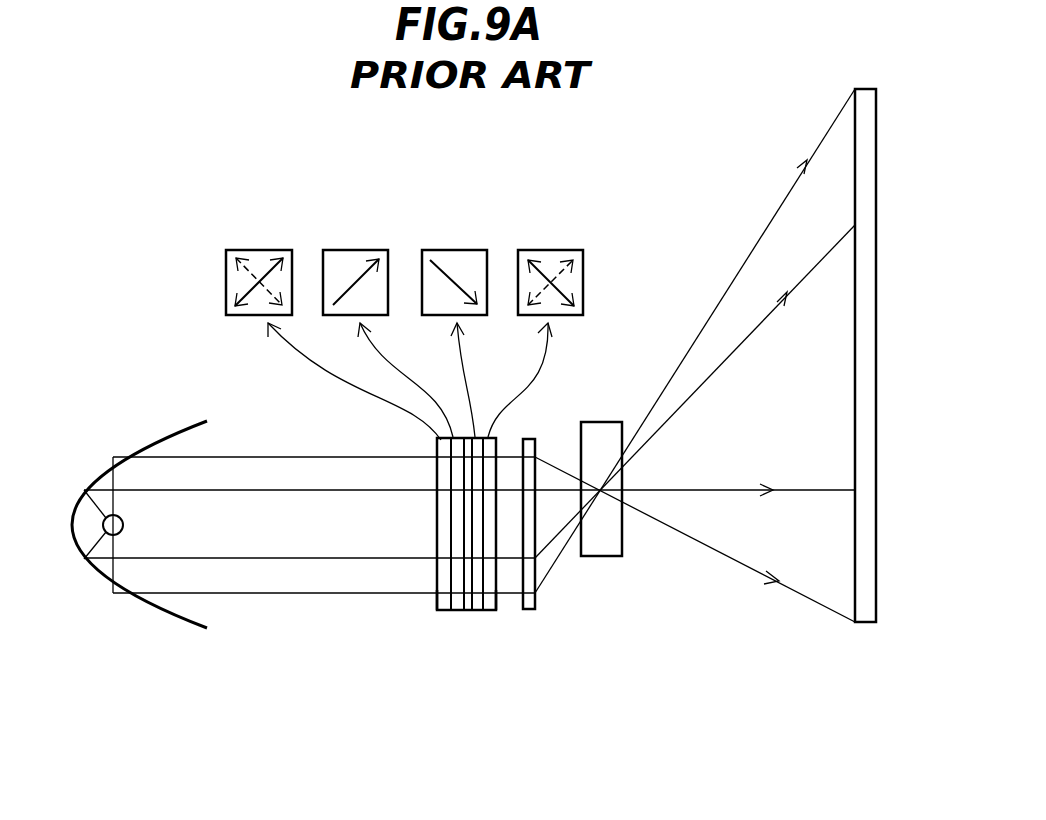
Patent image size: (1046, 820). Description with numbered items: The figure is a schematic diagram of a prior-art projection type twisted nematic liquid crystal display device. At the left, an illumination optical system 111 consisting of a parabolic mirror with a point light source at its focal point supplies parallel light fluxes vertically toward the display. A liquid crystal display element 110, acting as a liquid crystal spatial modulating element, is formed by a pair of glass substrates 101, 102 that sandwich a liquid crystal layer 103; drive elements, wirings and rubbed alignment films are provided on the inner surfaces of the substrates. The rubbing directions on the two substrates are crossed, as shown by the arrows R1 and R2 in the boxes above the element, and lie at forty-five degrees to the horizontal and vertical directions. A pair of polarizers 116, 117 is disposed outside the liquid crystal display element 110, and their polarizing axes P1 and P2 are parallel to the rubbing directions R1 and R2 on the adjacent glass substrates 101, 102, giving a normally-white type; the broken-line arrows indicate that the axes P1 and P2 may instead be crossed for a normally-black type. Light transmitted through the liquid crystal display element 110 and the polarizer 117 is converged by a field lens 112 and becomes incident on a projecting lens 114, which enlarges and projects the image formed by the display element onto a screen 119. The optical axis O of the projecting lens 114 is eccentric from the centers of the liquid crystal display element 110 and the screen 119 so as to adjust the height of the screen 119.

The illumination optical system 111 is at (125, 610).
The liquid crystal display element 110 is at (477, 584).
The glass substrate 101 is at (452, 612).
The liquid crystal layer 103 is at (468, 612).
The glass substrate 102 is at (485, 612).
The polarizer 116 is at (437, 604).
The polarizer 117 is at (547, 612).
The field lens 112 is at (540, 600).
The projecting lens 114 is at (600, 435).
The screen 119 is at (870, 625).
The optical axis O is at (699, 488).
The polarizing axis P1 is at (265, 270).
The rubbing direction R1 is at (352, 275).
The rubbing direction R2 is at (445, 270).
The polarizing axis P2 is at (546, 273).